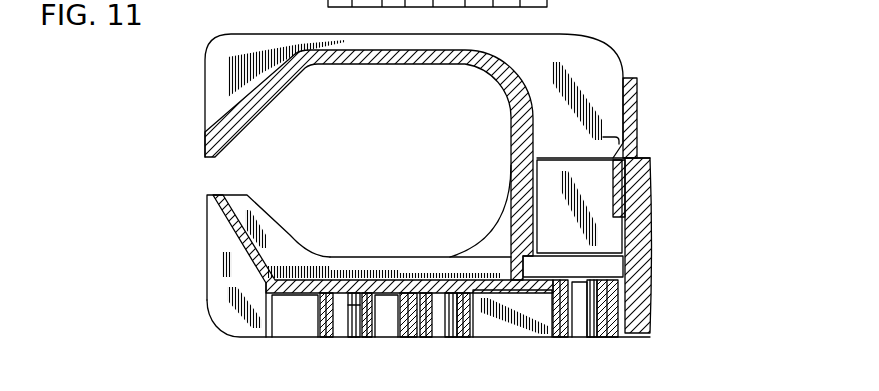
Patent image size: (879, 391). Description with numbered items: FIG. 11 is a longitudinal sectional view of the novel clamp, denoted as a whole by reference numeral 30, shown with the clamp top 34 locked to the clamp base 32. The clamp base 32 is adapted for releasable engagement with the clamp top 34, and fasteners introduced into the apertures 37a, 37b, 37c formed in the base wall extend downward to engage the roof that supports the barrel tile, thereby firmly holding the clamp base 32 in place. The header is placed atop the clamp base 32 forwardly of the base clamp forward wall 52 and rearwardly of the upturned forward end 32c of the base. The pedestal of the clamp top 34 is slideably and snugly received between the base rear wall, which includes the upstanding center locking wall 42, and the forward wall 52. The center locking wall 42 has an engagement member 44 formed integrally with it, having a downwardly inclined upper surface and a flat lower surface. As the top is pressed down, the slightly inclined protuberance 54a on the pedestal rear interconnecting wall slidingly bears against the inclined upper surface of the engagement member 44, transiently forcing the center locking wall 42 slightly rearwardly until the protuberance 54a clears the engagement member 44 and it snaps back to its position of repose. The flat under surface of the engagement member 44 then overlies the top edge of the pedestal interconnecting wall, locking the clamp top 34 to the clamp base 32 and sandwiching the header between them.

The illustrative embodiment 30 is at (678, 40).
The clamp base 32 is at (223, 332).
The upturned forward end 32c is at (207, 212).
The clamp top 34 is at (528, 34).
The aperture 37a is at (587, 325).
The aperture 37b is at (447, 338).
The aperture 37c is at (348, 340).
The center locking wall 42 is at (637, 119).
The engagement member 44 is at (608, 139).
The base clamp forward wall 52 is at (505, 215).
The inclined protuberance 54a is at (650, 158).